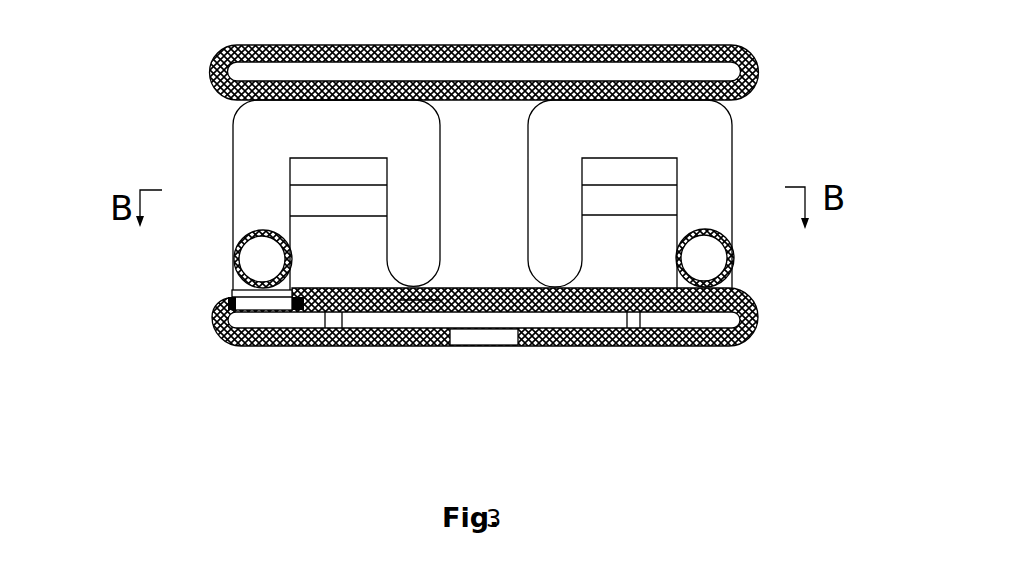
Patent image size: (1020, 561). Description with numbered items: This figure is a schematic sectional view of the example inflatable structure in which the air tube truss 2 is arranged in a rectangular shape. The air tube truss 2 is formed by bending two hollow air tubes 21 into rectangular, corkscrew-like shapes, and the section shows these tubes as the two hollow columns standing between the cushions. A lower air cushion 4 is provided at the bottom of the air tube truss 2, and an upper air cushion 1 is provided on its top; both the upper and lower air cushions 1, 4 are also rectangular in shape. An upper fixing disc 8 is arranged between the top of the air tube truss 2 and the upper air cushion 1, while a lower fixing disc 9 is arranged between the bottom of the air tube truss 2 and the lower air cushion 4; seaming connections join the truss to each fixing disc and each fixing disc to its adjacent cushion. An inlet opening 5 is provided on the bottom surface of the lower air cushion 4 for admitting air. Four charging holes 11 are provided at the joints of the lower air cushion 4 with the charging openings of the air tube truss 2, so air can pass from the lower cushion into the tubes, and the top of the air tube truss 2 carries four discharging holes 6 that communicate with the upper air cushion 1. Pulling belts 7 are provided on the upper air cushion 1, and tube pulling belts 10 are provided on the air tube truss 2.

The upper air cushion 1 is at (688, 73).
The air tube truss 2 is at (561, 191).
The hollow air tube 21 is at (697, 210).
The lower air cushion 4 is at (702, 317).
The inlet opening 5 is at (485, 330).
The discharging hole 6 is at (333, 102).
The pulling belt 7 is at (632, 322).
The upper fixing disc 8 is at (495, 101).
The lower fixing disc 9 is at (432, 303).
The tube pulling belt 10 is at (637, 200).
The charging hole 11 is at (258, 308).